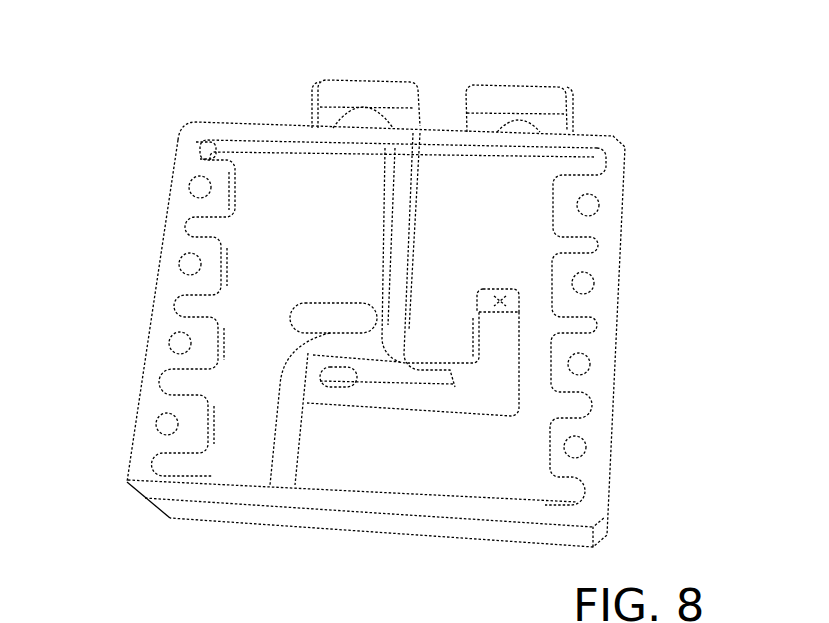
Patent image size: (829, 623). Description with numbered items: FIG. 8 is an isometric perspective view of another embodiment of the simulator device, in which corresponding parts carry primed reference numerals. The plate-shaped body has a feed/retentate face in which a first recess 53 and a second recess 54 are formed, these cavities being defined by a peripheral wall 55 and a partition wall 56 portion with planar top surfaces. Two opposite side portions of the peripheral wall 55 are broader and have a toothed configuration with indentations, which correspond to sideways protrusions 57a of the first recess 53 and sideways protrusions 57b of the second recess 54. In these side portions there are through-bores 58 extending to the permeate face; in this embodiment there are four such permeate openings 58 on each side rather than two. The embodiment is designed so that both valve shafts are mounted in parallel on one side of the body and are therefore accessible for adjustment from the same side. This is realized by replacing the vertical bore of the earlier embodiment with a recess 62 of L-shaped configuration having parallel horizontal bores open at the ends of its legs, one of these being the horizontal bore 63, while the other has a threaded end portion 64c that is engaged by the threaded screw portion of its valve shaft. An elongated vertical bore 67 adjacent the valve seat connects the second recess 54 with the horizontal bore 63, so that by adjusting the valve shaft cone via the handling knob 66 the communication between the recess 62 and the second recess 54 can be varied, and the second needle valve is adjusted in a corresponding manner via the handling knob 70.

The first recess 53 is at (305, 218).
The second recess 54 is at (497, 228).
The peripheral wall 55 is at (598, 477).
The partition wall 56 is at (403, 206).
The sideways protrusions of first recess 57a is at (183, 143).
The sideways protrusions of second recess 57b is at (597, 242).
The through-bores 58 is at (190, 265).
The L-shaped recess 62 is at (428, 398).
The horizontal bore 63 is at (337, 320).
The threaded end portion of horizontal bore 64c is at (512, 301).
The handling knob 66 is at (347, 93).
The vertical bore 67 is at (305, 307).
The handling knob 70 is at (530, 103).